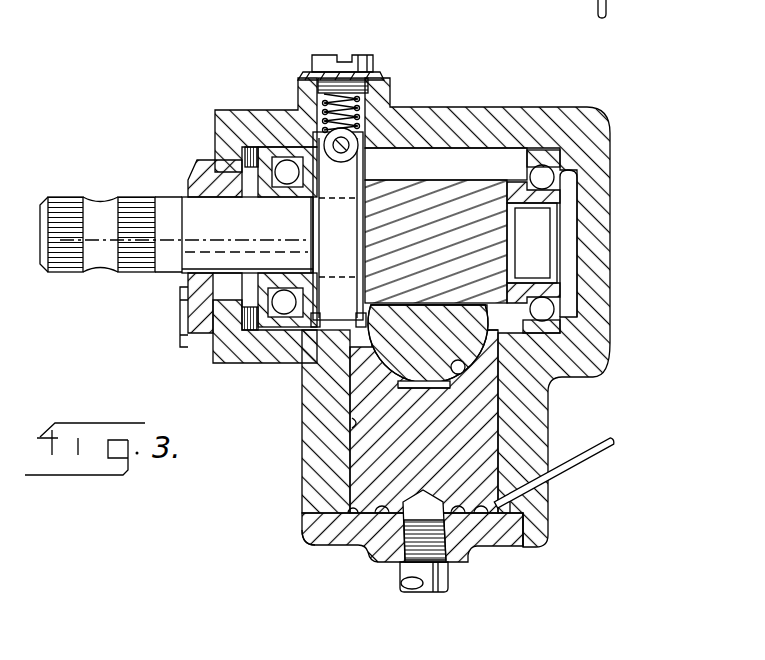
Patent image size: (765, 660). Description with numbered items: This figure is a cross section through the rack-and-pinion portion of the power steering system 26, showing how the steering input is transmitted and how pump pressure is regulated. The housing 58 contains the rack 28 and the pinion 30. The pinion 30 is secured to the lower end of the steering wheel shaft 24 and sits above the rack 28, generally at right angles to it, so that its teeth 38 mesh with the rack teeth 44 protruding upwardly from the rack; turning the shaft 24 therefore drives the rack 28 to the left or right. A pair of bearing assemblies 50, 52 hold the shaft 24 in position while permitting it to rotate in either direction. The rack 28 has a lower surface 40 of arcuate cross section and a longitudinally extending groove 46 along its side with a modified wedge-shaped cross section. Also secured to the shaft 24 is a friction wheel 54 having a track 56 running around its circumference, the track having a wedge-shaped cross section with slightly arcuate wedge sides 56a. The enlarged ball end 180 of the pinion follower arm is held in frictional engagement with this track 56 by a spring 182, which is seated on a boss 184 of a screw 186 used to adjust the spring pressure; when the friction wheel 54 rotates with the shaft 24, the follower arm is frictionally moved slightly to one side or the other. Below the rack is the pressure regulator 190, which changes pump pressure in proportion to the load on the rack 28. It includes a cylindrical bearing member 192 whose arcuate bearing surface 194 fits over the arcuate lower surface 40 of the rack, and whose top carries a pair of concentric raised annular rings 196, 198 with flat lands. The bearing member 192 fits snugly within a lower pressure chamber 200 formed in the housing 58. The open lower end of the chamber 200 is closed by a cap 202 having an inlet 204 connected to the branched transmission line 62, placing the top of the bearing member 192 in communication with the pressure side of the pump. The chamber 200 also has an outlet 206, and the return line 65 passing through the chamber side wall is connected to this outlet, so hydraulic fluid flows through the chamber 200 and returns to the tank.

The steering wheel shaft 24 is at (192, 247).
The power steering system 26 is at (426, 312).
The rack 28 is at (548, 385).
The pinion 30 is at (495, 165).
The pinion teeth 38 is at (432, 192).
The lower surface of the rack 40 is at (492, 358).
The rack teeth 44 is at (520, 258).
The longitudinally extending groove 46 is at (372, 325).
The bearing assembly 50 is at (280, 140).
The bearing assembly 52 is at (566, 162).
The friction wheel 54 is at (312, 138).
The track 56 is at (262, 368).
The wedge sides 56a is at (327, 218).
The housing 58 is at (613, 110).
The branched transmission line 62 is at (428, 578).
The return line 65 is at (595, 460).
The enlarged ball end 180 is at (363, 126).
The spring 182 is at (356, 110).
The boss 184 is at (349, 92).
The screw 186 is at (364, 60).
The pressure regulator 190 is at (298, 548).
The cylindrical bearing member 192 is at (370, 450).
The arcuate bearing surface 194 is at (420, 384).
The raised annular ring 196 is at (385, 527).
The raised annular ring 198 is at (473, 507).
The lower pressure chamber 200 is at (355, 423).
The cap 202 is at (543, 537).
The inlet 204 is at (398, 560).
The outlet 206 is at (507, 506).